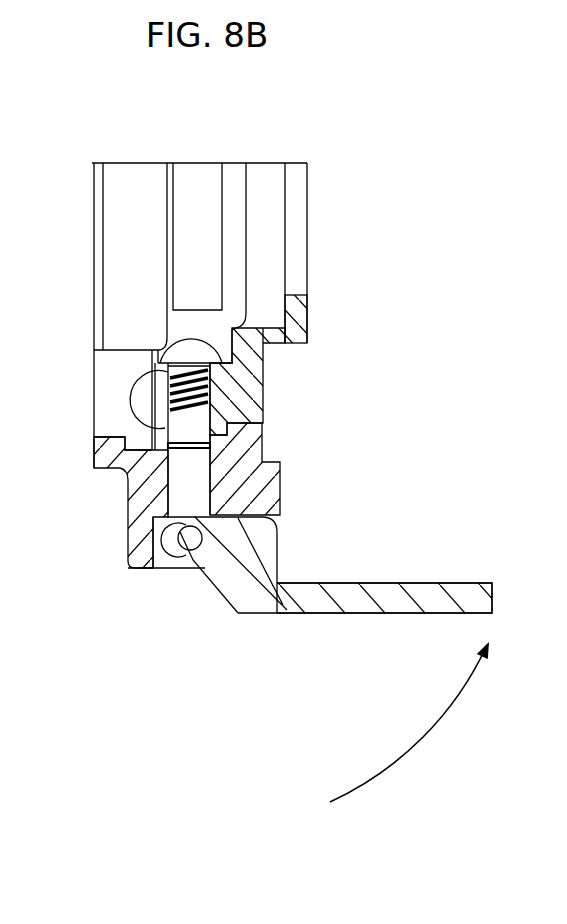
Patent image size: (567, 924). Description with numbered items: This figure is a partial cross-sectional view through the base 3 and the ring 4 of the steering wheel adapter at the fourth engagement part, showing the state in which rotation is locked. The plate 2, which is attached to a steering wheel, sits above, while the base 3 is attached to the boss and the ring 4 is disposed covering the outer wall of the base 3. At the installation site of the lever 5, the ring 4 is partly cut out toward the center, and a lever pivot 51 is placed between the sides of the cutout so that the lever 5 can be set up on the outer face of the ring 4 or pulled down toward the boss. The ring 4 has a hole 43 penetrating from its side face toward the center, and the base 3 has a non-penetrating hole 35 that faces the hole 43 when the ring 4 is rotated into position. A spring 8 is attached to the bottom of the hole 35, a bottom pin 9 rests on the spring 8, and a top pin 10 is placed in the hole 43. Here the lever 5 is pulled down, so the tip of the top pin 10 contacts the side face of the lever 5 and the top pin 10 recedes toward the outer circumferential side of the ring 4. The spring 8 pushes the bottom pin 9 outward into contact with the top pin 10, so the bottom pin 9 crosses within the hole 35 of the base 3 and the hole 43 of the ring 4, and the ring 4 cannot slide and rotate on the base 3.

The plate 2 is at (233, 190).
The base 3 is at (297, 312).
The spring 8 is at (213, 381).
The bottom pin 9 is at (176, 417).
The hole 35 is at (125, 438).
The top pin 10 is at (178, 486).
The hole 43 is at (160, 522).
The ring 4 is at (267, 482).
The lever pivot 51 is at (188, 540).
The lever 5 is at (332, 606).